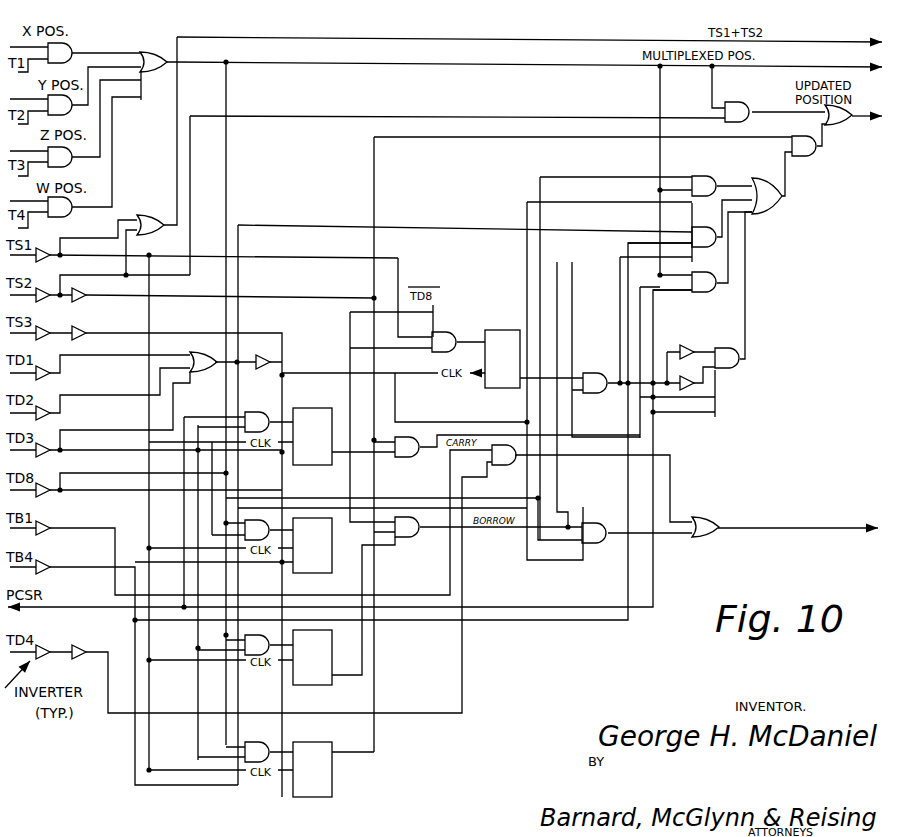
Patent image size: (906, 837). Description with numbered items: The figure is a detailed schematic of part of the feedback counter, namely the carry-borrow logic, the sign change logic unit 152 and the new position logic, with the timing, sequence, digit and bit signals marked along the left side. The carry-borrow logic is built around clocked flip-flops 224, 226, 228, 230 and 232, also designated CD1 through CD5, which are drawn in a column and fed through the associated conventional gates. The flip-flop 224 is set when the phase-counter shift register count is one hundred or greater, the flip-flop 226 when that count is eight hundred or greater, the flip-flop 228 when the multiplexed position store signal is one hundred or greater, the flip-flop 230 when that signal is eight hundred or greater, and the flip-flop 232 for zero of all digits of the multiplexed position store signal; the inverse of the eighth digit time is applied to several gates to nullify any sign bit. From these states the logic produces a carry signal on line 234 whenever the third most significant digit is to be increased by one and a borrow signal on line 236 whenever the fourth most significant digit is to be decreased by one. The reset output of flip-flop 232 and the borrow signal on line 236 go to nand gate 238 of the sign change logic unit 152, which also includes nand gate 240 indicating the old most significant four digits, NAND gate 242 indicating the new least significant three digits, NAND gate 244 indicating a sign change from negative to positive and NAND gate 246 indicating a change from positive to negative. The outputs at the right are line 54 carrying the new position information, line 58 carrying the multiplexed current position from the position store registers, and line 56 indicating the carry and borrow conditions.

The line 54 is at (852, 122).
The line 56 is at (797, 528).
The line 58 is at (605, 67).
The sign change logic unit 152 is at (768, 320).
The clocked flip-flop 224 is at (327, 420).
The clocked flip-flop 226 is at (320, 560).
The clocked flip-flop 228 is at (313, 678).
The clocked flip-flop 230 is at (318, 787).
The clocked flip-flop 232 is at (497, 330).
The line 234 is at (425, 452).
The line 236 is at (498, 538).
The nand gate 238 is at (598, 373).
The nand gate 240 is at (705, 177).
The NAND gate 242 is at (706, 247).
The NAND gate 244 is at (707, 295).
The NAND gate 246 is at (733, 372).